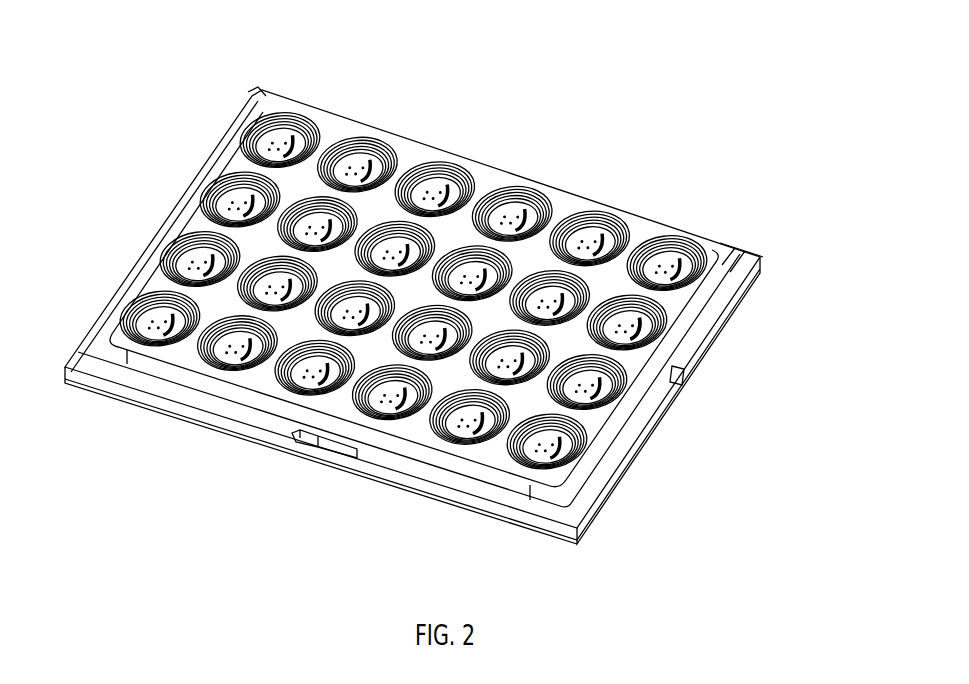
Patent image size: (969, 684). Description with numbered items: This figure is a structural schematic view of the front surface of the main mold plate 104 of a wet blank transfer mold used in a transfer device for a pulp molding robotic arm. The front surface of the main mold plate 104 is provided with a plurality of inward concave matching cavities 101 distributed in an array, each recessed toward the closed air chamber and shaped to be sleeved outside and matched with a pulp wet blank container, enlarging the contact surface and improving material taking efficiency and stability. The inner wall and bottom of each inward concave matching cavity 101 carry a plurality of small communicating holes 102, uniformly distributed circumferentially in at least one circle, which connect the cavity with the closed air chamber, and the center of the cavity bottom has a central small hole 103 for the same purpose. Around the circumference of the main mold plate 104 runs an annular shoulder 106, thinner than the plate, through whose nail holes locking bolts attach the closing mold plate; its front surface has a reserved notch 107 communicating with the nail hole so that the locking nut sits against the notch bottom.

The inward concave matching cavity 101 is at (692, 258).
The small communicating hole 102 is at (596, 232).
The central small hole 103 is at (640, 330).
The main mold plate 104 is at (262, 383).
The annular shoulder 106 is at (420, 473).
The reserved notch 107 is at (323, 450).